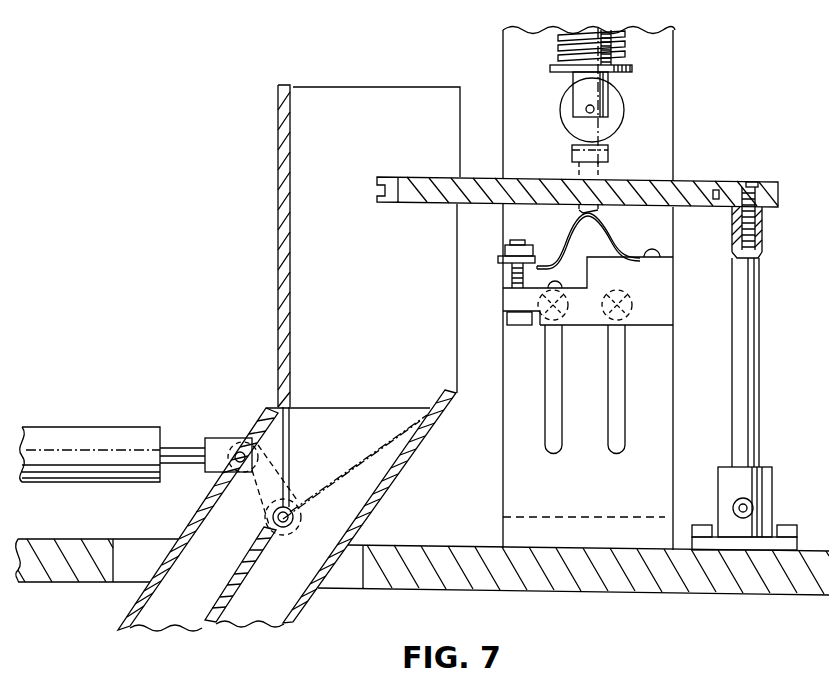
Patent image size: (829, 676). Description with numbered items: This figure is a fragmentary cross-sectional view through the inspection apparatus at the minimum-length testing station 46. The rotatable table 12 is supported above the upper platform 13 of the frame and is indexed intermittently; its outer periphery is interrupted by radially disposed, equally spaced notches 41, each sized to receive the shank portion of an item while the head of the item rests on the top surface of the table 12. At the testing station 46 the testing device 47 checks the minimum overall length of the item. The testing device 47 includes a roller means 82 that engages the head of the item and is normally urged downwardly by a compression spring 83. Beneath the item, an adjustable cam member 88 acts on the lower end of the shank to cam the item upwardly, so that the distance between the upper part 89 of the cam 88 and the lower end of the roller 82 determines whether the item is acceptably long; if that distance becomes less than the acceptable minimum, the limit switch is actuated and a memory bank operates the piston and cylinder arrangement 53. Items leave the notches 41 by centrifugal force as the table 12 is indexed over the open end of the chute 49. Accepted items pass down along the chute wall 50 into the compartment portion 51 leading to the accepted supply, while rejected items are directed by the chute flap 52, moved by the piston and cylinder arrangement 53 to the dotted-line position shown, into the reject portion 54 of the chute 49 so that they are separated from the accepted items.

The rotatable table 12 is at (440, 177).
The upper platform 13 is at (64, 539).
The notches 41 is at (378, 180).
The testing station 46 is at (698, 163).
The testing device 47 is at (642, 90).
The chute 49 is at (280, 243).
The chute wall 50 is at (350, 503).
The compartment portion 51 is at (270, 595).
The chute flap 52 is at (290, 410).
The piston and cylinder arrangement 53 is at (93, 432).
The reject portion 54 is at (178, 590).
The roller means 82 is at (562, 110).
The compression spring 83 is at (605, 53).
The adjustable cam member 88 is at (622, 236).
The upper part of the cam 89 is at (578, 211).